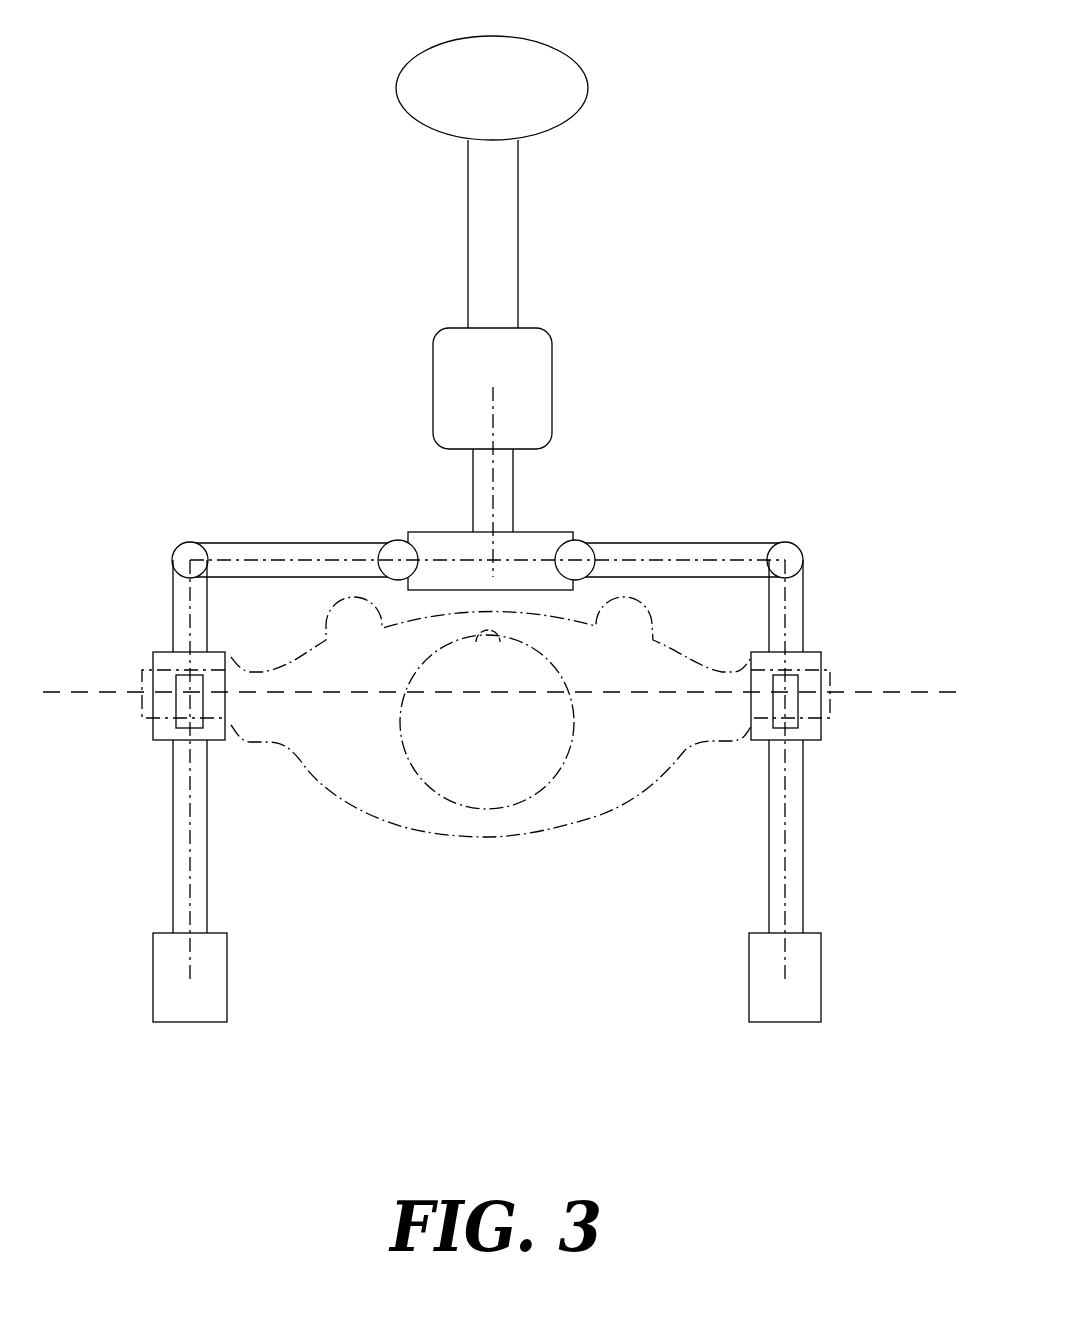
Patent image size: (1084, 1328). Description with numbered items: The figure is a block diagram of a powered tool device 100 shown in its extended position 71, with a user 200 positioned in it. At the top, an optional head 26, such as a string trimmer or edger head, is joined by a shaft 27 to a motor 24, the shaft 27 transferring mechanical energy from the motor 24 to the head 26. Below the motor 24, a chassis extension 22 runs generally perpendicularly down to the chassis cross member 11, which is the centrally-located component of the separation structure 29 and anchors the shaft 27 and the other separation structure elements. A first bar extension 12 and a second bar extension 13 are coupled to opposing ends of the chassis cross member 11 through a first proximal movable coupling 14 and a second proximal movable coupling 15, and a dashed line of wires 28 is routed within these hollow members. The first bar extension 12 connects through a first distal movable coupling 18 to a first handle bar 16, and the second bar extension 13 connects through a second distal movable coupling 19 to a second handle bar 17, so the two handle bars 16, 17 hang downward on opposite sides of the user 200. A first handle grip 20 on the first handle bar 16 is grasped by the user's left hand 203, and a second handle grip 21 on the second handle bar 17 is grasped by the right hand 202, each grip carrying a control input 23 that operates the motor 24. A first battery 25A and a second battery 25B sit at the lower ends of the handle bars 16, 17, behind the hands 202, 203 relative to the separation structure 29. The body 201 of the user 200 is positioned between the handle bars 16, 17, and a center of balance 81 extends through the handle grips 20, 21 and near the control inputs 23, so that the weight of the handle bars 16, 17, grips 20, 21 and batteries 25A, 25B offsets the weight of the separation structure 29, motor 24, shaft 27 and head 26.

The powered tool device 100 is at (784, 68).
The head 26 is at (558, 76).
The shaft 27 is at (500, 247).
The motor 24 is at (524, 386).
The chassis extension 22 is at (503, 502).
The extended position 71 is at (88, 502).
The separation structure 29 is at (326, 516).
The first bar extension 12 is at (296, 555).
The second bar extension 13 is at (683, 556).
The chassis cross member 11 is at (462, 544).
The first proximal movable coupling 14 is at (394, 550).
The second proximal movable coupling 15 is at (582, 550).
The first distal movable coupling 18 is at (180, 566).
The second distal movable coupling 19 is at (796, 562).
The wires 28 is at (702, 562).
The first handle bar 16 is at (180, 606).
The second handle bar 17 is at (798, 598).
The first handle grip 20 is at (166, 666).
The second handle grip 21 is at (806, 664).
The control input 23 is at (193, 698).
The left hand 203 is at (145, 710).
The right hand 202 is at (832, 722).
The center of balance 81 is at (906, 691).
The user 200 is at (408, 852).
The body 201 is at (598, 770).
The first battery 25A is at (166, 986).
The second battery 25B is at (810, 988).